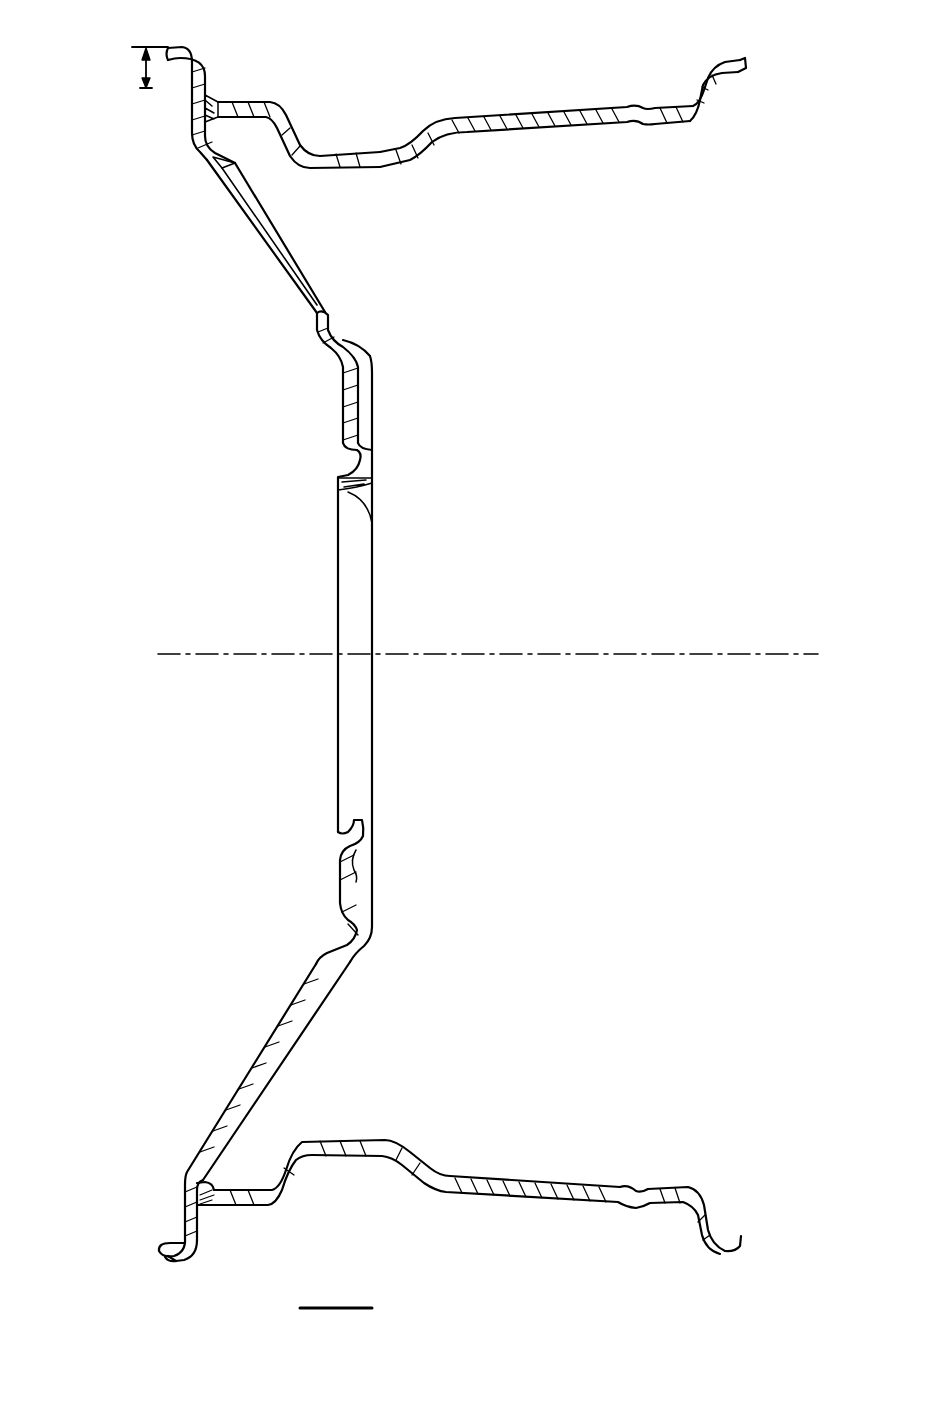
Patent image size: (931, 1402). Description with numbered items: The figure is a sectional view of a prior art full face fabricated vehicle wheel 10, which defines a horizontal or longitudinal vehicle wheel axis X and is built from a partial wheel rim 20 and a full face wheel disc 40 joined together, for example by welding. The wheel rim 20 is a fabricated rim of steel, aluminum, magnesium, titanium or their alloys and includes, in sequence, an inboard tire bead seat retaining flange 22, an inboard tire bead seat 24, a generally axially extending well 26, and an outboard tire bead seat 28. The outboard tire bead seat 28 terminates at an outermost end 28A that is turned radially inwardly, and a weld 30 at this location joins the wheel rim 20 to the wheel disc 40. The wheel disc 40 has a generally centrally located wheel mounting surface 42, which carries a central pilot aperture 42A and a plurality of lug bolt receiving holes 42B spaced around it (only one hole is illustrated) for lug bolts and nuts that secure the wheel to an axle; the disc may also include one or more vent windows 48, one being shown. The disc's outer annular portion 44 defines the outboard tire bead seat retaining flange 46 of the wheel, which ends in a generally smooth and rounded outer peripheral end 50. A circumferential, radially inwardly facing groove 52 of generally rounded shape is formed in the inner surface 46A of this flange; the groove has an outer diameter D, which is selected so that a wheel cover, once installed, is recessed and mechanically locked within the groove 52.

The vehicle wheel 10 is at (178, 947).
The wheel rim 20 is at (555, 128).
The inboard tire bead seat retaining flange 22 is at (708, 62).
The inboard tire bead seat 24 is at (662, 100).
The well 26 is at (437, 120).
The outboard tire bead seat 28 is at (248, 102).
The outermost end 28A is at (192, 118).
The weld 30 is at (210, 98).
The wheel disc 40 is at (352, 960).
The wheel mounting surface 42 is at (374, 463).
The pilot aperture 42A is at (348, 490).
The lug bolt receiving holes 42B is at (346, 862).
The outer annular portion 44 is at (258, 1088).
The outboard tire bead seat retaining flange 46 is at (203, 1226).
The inner surface 46A is at (192, 1260).
The vent window 48 is at (325, 310).
The outer peripheral end 50 is at (160, 1255).
The groove 52 is at (172, 1264).
The vehicle wheel axis X is at (520, 655).
The outer diameter of the groove D is at (142, 72).